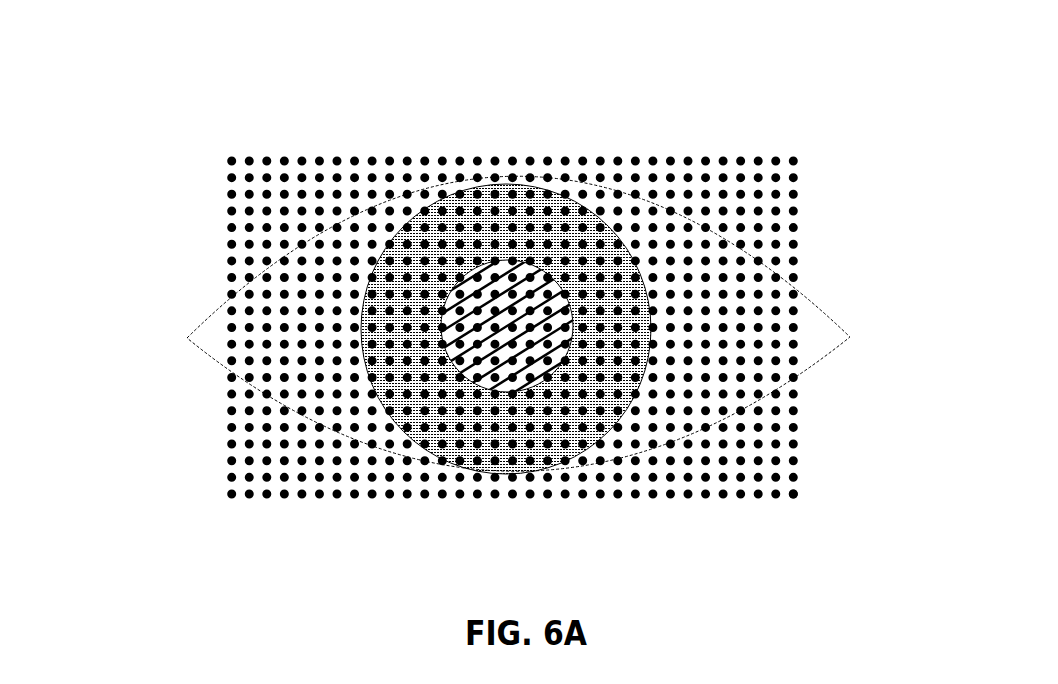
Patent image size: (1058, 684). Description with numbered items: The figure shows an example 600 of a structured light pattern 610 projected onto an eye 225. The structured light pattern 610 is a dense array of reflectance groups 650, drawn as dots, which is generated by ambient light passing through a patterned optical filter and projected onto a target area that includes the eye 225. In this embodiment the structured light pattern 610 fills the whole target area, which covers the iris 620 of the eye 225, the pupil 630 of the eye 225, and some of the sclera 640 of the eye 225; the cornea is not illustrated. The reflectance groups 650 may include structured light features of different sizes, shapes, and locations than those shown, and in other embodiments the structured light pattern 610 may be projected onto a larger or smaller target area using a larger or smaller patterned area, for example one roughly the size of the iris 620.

The eye image with dense structured light pattern 600 is at (215, 35).
The structured light pattern 610 is at (813, 198).
The eye 225 is at (198, 325).
The sclera 640 is at (805, 312).
The iris 620 is at (653, 342).
The pupil 630 is at (449, 353).
The reflectance groups 650 is at (797, 493).